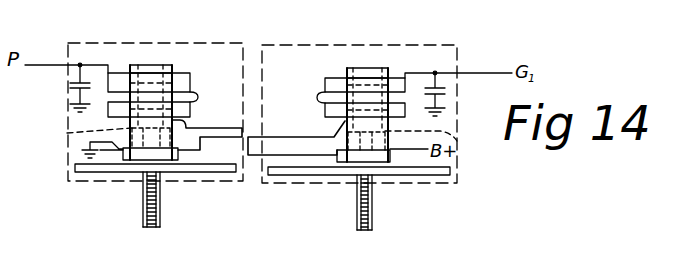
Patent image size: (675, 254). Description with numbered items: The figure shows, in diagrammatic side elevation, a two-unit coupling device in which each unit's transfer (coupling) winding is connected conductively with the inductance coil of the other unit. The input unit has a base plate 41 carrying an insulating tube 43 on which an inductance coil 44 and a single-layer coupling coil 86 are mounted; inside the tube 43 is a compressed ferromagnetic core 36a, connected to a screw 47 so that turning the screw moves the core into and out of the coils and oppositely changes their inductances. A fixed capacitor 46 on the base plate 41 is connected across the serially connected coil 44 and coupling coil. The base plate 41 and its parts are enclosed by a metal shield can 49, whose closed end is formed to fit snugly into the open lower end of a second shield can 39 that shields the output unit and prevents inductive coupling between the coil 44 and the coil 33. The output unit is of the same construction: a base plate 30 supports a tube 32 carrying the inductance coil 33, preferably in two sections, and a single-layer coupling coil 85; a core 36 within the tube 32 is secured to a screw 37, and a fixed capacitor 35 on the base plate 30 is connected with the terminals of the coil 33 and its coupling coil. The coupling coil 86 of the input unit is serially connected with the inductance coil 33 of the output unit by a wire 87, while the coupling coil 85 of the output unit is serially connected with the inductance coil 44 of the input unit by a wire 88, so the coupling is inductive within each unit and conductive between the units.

The shield can 49 is at (170, 43).
The shield can 39 is at (377, 45).
The tube 43 is at (163, 72).
The inductance coil 44 is at (190, 80).
The wire 88 is at (217, 82).
The fixed capacitor 46 is at (70, 91).
The core 36a is at (76, 131).
The base plate 41 is at (108, 172).
The screw 47 is at (143, 214).
The coupling coil 86 is at (179, 162).
The tube 32 is at (386, 75).
The inductance coil 33 is at (324, 109).
The wire 87 is at (298, 120).
The fixed capacitor 35 is at (447, 93).
The core 36 is at (462, 146).
The base plate 30 is at (301, 177).
The coupling coil 85 is at (345, 154).
The screw 37 is at (373, 222).